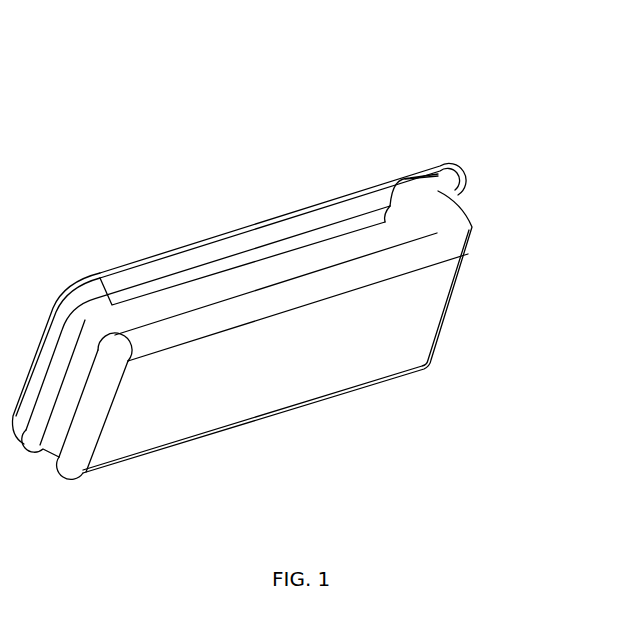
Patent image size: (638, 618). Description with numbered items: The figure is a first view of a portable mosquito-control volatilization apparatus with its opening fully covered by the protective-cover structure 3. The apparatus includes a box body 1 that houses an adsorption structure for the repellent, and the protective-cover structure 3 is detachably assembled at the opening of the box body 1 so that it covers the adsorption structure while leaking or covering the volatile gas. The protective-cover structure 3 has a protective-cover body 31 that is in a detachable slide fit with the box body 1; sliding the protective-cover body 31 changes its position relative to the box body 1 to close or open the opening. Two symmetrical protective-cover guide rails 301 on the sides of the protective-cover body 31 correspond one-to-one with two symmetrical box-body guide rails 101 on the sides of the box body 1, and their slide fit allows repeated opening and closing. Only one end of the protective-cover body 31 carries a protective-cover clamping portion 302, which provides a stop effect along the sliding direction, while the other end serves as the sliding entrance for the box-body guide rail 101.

The box body 1 is at (257, 375).
The box-body guide rail 101 is at (427, 198).
The protective-cover structure 3 is at (150, 207).
The protective-cover body 31 is at (424, 166).
The protective-cover guide rail 301 is at (387, 215).
The protective-cover clamping portion 302 is at (57, 383).